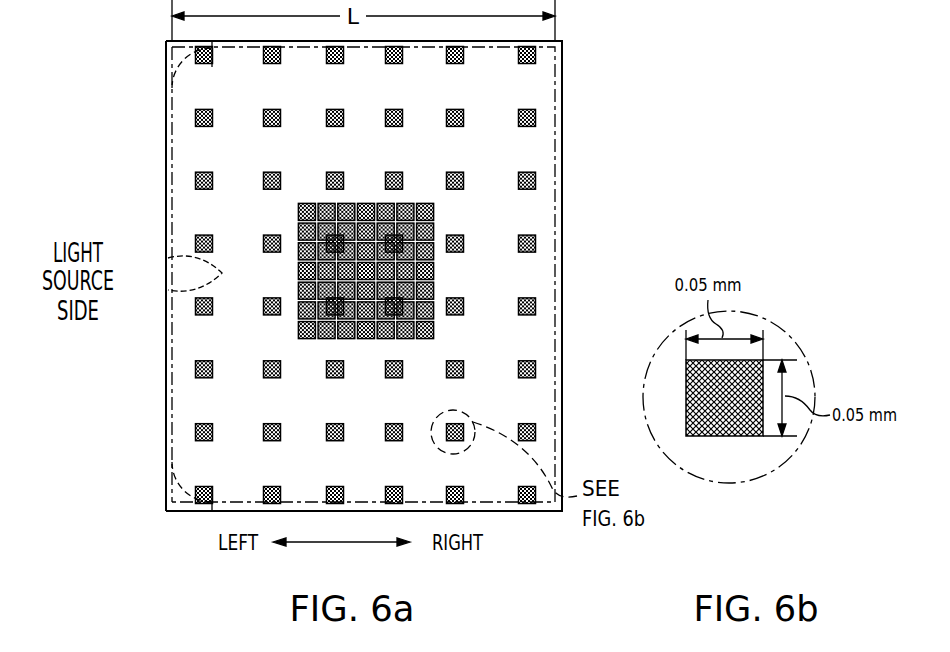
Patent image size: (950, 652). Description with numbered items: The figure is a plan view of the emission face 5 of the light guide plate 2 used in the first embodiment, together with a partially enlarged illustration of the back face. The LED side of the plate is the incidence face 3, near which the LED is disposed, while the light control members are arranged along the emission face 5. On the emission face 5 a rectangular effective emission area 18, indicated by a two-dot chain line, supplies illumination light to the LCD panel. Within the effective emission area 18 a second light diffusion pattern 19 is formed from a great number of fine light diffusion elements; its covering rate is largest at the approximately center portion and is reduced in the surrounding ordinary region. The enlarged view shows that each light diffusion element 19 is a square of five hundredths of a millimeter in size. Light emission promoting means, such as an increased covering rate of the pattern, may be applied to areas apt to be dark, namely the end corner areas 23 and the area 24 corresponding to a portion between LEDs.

In FIG. 6a, the light guide plate 2 is at (160, 405).
In FIG. 6a, the incidence face 3 is at (165, 337).
In FIG. 6a, the emission face 5 is at (182, 163).
In FIG. 6a, the effective emission area 18 is at (170, 140).
In FIG. 6a, the second light diffusion pattern 19 is at (414, 205).
In FIG. 6b, the second light diffusion pattern 19 is at (682, 416).
In FIG. 6a, the end corner areas 23 is at (172, 72).
In FIG. 6a, the area corresponding to a portion between LEDs 24 is at (166, 273).